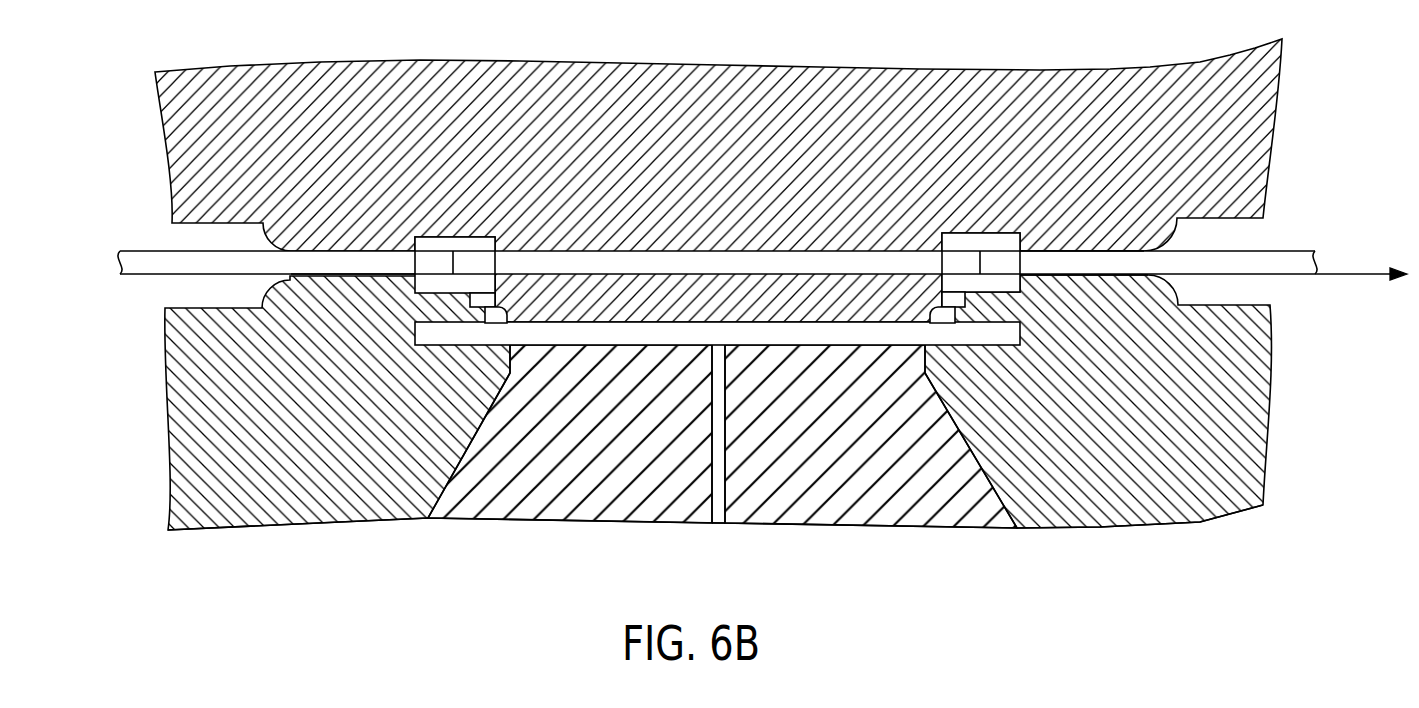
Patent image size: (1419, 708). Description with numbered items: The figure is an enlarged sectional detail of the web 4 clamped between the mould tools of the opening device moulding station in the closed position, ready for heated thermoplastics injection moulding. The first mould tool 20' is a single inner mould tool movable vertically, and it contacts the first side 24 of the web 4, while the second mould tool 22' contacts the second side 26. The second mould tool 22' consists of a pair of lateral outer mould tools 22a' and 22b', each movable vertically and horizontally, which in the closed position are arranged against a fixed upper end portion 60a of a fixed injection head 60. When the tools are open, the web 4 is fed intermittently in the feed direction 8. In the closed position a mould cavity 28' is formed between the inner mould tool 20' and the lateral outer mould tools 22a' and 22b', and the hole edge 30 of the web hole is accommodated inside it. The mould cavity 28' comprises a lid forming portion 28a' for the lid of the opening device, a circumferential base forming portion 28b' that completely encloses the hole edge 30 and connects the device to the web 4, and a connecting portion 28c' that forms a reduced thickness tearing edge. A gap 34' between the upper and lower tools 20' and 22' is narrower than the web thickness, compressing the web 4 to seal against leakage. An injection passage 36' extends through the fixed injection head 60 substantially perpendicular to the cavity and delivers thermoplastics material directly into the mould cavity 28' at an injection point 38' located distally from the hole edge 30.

The first mould tool 20' is at (718, 165).
The second mould tool 22' is at (738, 434).
The lateral outer mould tool 22a' is at (1129, 401).
The lateral outer mould tool 22b' is at (306, 403).
The fixed injection head 60 is at (923, 507).
The upper end portion 60a is at (607, 487).
The injection passage 36' is at (727, 460).
The injection point 38' is at (717, 368).
The web 4 is at (1268, 260).
The feed direction 8 is at (1362, 273).
The mould cavity 28' is at (412, 297).
The lid forming portion 28a' is at (431, 358).
The base forming portion 28b' is at (455, 232).
The connecting portion 28c' is at (470, 354).
The hole edge 30 is at (993, 263).
The first side of web 24 is at (1088, 251).
The second side of web 26 is at (1063, 276).
The gap 34' is at (353, 234).